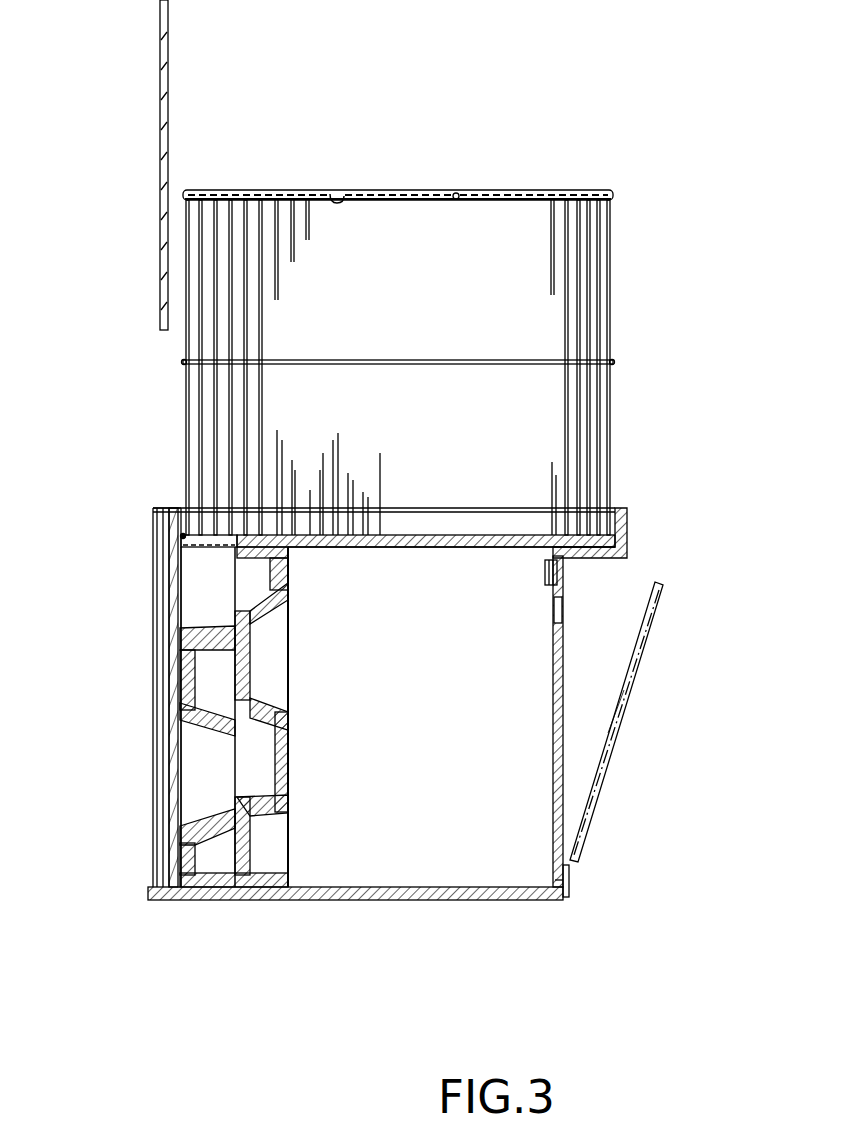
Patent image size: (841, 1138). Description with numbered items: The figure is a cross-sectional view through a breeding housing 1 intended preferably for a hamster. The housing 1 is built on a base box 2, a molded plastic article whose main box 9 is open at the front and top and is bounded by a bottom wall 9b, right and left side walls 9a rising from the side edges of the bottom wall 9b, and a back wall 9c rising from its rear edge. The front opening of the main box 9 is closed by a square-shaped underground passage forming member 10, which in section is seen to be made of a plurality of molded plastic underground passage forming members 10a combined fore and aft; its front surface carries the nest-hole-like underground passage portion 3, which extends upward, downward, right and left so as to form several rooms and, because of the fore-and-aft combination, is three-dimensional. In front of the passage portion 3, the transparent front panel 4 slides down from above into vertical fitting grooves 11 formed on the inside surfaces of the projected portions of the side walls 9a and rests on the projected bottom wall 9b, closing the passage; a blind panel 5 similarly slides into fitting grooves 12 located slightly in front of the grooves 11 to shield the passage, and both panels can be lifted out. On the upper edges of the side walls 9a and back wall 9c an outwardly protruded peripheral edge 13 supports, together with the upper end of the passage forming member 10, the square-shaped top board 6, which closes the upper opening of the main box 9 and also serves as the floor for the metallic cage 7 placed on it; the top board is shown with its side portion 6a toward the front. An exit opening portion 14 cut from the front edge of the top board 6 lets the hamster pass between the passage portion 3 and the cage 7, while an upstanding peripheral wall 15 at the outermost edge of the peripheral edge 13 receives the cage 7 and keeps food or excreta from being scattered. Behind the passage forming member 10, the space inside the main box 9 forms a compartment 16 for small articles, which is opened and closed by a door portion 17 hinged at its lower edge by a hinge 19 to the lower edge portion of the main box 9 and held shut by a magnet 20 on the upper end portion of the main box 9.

The breeding housing 1 is at (541, 158).
The base box 2 is at (418, 900).
The underground passage portion 3 is at (210, 773).
The transparent front panel 4 is at (172, 612).
The blind panel 5 is at (160, 89).
The top board 6 is at (435, 533).
The side plate of base 6a is at (153, 510).
The cage 7 is at (610, 287).
The main box 9 is at (408, 766).
The side wall 9a is at (157, 708).
The bottom wall 9b is at (325, 900).
The back wall 9c is at (558, 752).
The underground passage forming member 10 is at (196, 785).
The underground passage forming member 10a is at (300, 962).
The fitting groove 11 is at (173, 582).
The fitting groove 12 is at (163, 540).
The outwardly protruded peripheral edge 13 is at (598, 566).
The exit opening portion 14 is at (207, 533).
The upstanding peripheral wall 15 is at (627, 520).
The compartment 16 is at (503, 695).
The door portion 17 is at (565, 683).
The hinge 19 is at (567, 880).
The magnet 20 is at (545, 567).